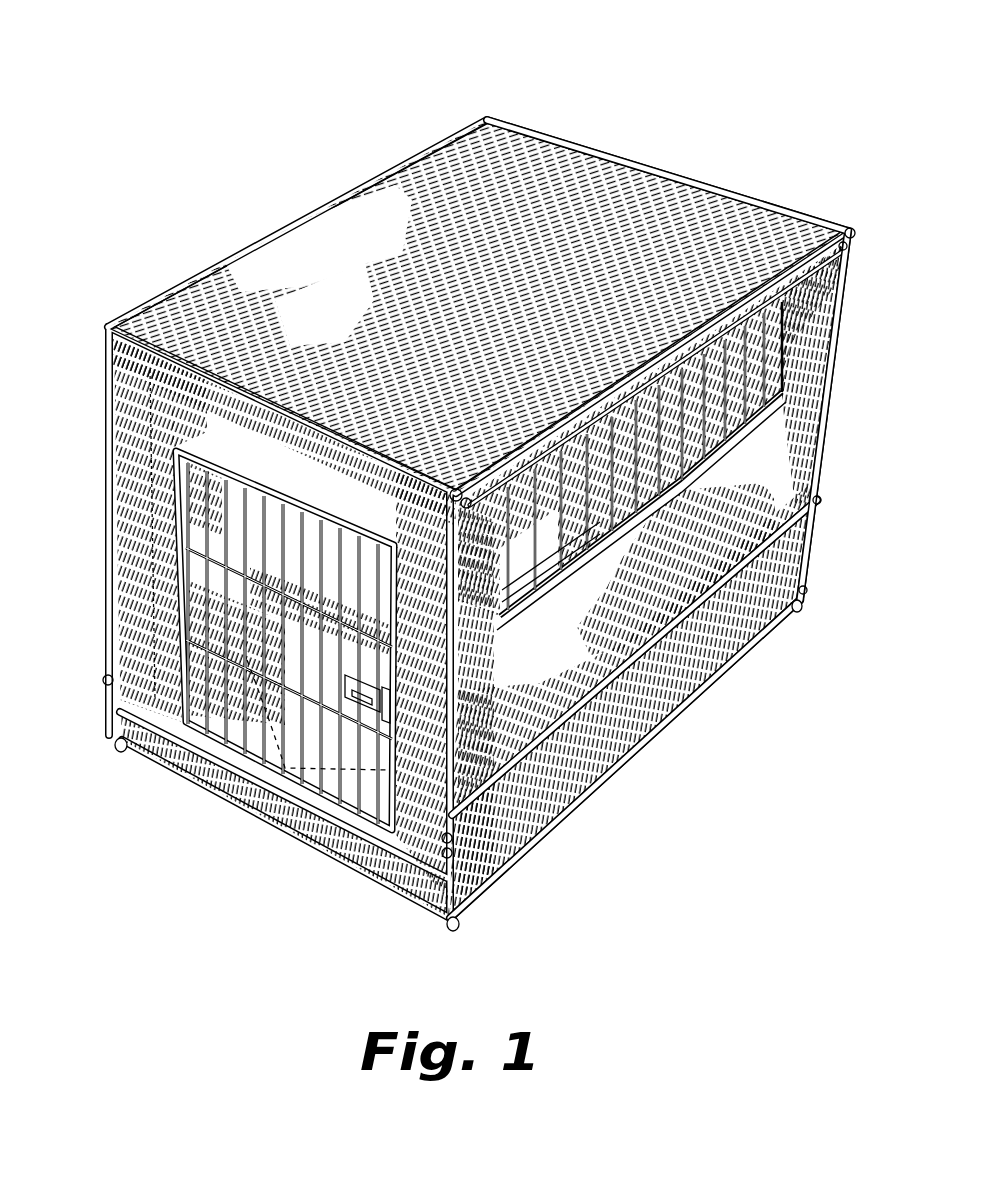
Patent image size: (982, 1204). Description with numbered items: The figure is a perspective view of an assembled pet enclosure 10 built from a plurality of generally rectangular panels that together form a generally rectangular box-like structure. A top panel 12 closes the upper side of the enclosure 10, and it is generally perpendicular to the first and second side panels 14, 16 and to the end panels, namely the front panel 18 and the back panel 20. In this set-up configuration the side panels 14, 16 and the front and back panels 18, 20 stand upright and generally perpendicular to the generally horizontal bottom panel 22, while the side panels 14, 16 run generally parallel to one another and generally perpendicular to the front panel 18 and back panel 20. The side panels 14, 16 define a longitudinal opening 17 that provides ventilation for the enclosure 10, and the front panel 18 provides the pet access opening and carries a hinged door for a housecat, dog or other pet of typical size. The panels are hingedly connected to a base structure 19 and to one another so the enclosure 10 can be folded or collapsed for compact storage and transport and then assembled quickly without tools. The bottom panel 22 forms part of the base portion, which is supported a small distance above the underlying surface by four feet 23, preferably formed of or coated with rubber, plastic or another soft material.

The enclosure 10 is at (692, 92).
The top panel 12 is at (328, 256).
The first side panel 14 is at (772, 470).
The second side panel 16 is at (195, 583).
The longitudinal opening 17 is at (772, 378).
The front panel 18 is at (168, 426).
The base structure 19 is at (536, 828).
The back panel 20 is at (798, 215).
The bottom panel 22 is at (217, 712).
The feet 23 is at (122, 745).